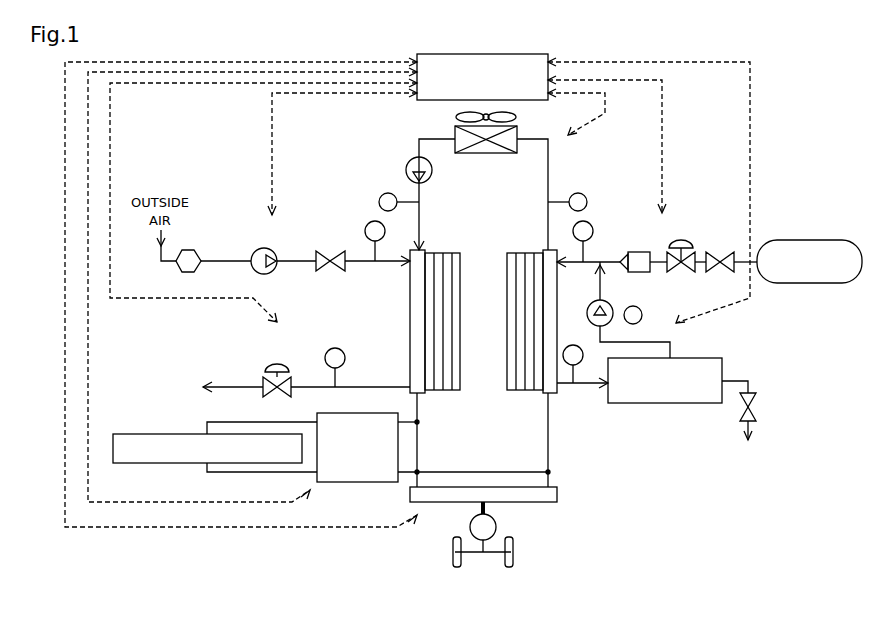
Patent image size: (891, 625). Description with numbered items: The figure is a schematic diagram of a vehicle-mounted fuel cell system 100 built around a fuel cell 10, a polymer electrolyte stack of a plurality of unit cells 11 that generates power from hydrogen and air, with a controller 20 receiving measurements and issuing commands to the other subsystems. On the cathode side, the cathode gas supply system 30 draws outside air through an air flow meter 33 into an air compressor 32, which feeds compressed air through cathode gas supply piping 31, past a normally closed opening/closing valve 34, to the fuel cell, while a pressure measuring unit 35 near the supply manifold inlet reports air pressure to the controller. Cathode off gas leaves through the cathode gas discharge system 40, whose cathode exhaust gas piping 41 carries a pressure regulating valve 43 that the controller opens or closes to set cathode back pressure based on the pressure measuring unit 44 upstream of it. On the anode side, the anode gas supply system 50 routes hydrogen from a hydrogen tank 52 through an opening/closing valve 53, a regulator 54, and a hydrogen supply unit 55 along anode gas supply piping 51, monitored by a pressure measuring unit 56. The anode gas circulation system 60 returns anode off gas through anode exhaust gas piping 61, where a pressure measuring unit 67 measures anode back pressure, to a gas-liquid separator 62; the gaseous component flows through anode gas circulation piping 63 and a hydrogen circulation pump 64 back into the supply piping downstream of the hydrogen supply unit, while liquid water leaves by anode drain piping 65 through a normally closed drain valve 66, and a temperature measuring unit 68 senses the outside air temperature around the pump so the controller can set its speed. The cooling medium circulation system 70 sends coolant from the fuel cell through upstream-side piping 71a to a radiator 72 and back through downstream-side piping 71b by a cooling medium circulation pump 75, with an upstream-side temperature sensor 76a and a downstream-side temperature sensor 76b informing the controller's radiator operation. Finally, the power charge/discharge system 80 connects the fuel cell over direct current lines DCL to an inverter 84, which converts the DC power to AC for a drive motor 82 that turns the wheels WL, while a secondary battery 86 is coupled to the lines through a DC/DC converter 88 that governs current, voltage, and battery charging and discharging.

The fuel cell system 100 is at (831, 59).
The controller 20 is at (485, 55).
The cooling medium circulation system 70 is at (397, 128).
The upstream-side piping 71a is at (529, 136).
The downstream-side piping 71b is at (438, 136).
The radiator 72 is at (478, 155).
The cooling medium circulation pump 75 is at (410, 166).
The upstream-side temperature sensor 76a is at (584, 194).
The downstream-side temperature sensor 76b is at (383, 194).
The cathode gas supply system 30 is at (224, 197).
The cathode gas supply piping 31 is at (240, 264).
The air compressor 32 is at (266, 248).
The air flow meter 33 is at (192, 250).
The opening/closing valve 34 is at (327, 254).
The pressure measuring unit 35 is at (366, 224).
The fuel cell 10 is at (483, 306).
The unit cell 11 is at (445, 252).
The anode gas supply system 50 is at (790, 200).
The anode gas supply piping 51 is at (603, 260).
The hydrogen tank 52 is at (798, 240).
The opening/closing valve 53 is at (717, 251).
The regulator 54 is at (680, 241).
The hydrogen supply unit 55 is at (639, 251).
The pressure measuring unit 56 is at (591, 228).
The anode gas circulation system 60 is at (730, 348).
The anode exhaust gas piping 61 is at (582, 390).
The gas-liquid separator 62 is at (695, 404).
The anode gas circulation piping 63 is at (672, 356).
The hydrogen circulation pump 64 is at (589, 306).
The anode drain piping 65 is at (758, 394).
The drain valve 66 is at (755, 408).
The pressure measuring unit 67 is at (568, 347).
The temperature measuring unit 68 is at (643, 314).
The cathode gas discharge system 40 is at (210, 346).
The cathode exhaust gas piping 41 is at (240, 383).
The pressure regulating valve 43 is at (278, 368).
The pressure measuring unit 44 is at (345, 357).
The power charge/discharge system 80 is at (587, 525).
The drive motor 82 is at (497, 527).
The inverter 84 is at (557, 497).
The secondary battery 86 is at (165, 434).
The DC/DC converter 88 is at (367, 413).
The direct current lines DCL is at (420, 450).
The wheels WL is at (513, 551).